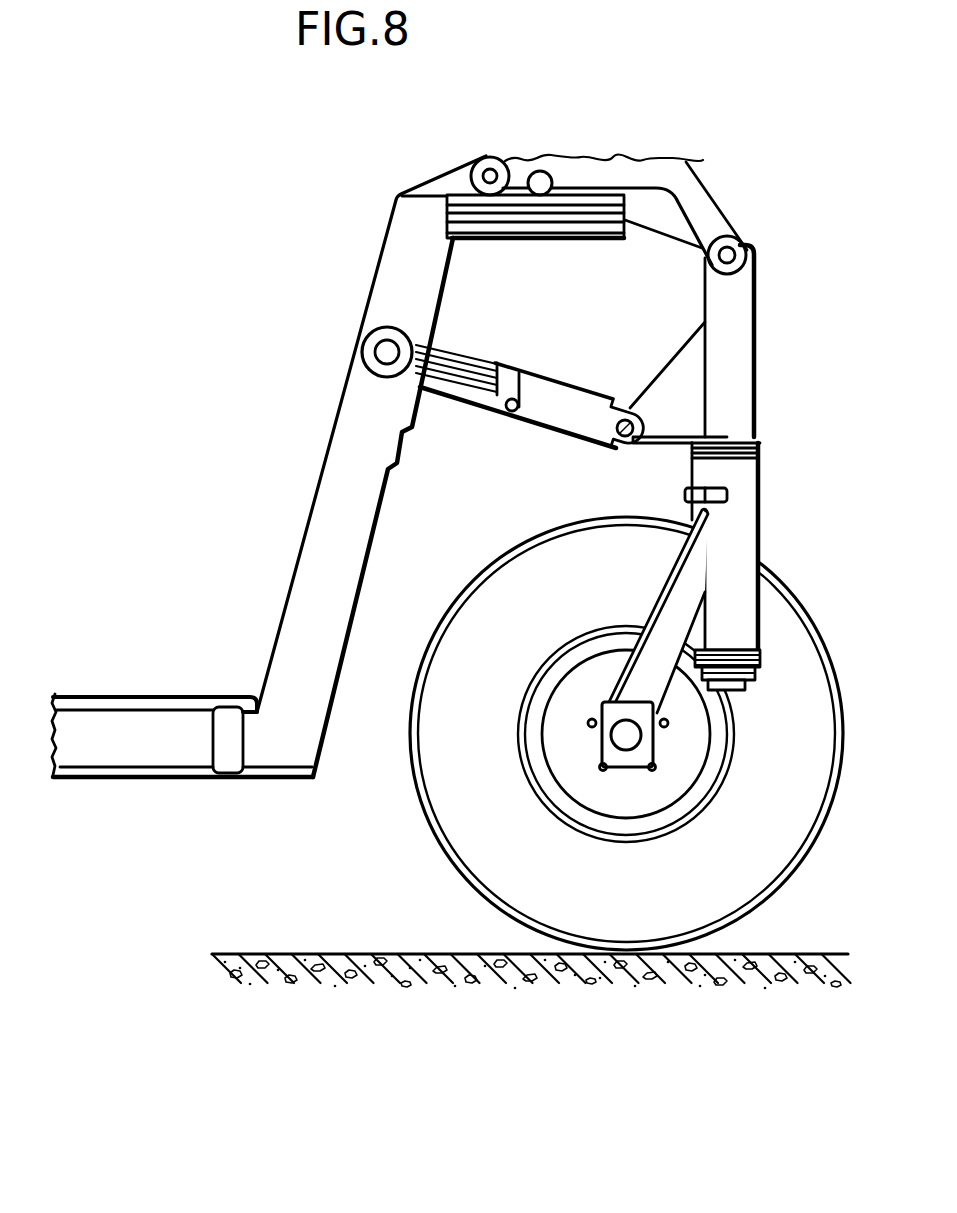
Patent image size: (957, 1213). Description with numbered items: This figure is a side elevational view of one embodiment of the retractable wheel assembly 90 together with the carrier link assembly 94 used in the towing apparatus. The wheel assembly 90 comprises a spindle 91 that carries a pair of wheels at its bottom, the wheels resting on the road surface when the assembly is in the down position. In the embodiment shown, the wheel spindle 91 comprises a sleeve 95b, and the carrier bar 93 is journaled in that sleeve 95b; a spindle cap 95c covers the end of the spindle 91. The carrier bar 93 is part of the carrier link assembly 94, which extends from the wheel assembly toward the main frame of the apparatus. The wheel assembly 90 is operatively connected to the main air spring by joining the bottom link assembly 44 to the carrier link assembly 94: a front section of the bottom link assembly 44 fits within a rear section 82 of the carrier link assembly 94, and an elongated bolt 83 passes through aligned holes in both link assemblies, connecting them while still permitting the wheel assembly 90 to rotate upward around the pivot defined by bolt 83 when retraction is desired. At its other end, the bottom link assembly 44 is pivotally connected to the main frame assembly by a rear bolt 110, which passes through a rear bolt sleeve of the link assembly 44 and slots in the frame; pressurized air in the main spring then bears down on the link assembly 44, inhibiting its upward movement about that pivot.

The bottom link assembly 44 is at (532, 366).
The rear section 82 is at (658, 343).
The elongated bolt 83 is at (613, 450).
The retractable wheel assembly 90 is at (643, 733).
The spindle 91 is at (741, 543).
The carrier bar 93 is at (742, 299).
The carrier link assembly 94 is at (618, 189).
The sleeve 95b is at (787, 546).
The spindle cap 95c is at (756, 719).
The rear bolt 110 is at (331, 347).